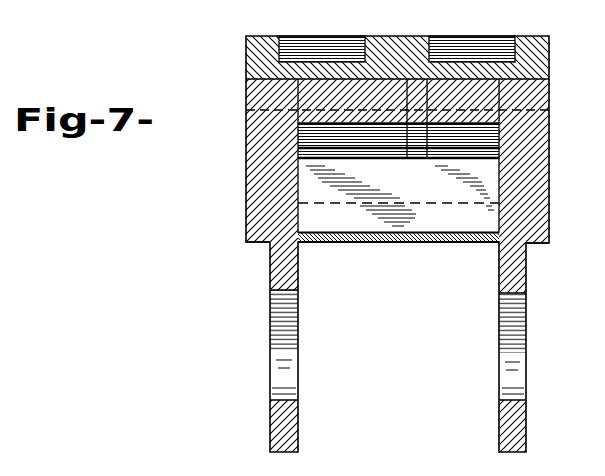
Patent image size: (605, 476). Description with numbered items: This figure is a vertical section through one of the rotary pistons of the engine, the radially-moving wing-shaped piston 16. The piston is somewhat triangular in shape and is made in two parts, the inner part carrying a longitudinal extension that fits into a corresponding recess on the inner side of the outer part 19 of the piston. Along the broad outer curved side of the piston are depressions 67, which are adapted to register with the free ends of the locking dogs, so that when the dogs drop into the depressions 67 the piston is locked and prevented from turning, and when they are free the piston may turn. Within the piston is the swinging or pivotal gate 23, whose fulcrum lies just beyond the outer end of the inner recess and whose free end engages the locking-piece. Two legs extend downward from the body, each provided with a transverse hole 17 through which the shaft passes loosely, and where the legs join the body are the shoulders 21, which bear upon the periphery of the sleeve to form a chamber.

The radially-moving wing-shaped piston 16 is at (376, 244).
The outer part of the piston 19 is at (537, 70).
The depression 67 is at (318, 50).
The swinging gate 23 is at (398, 196).
The transverse hole 17 is at (298, 301).
The shoulder 21 is at (262, 244).